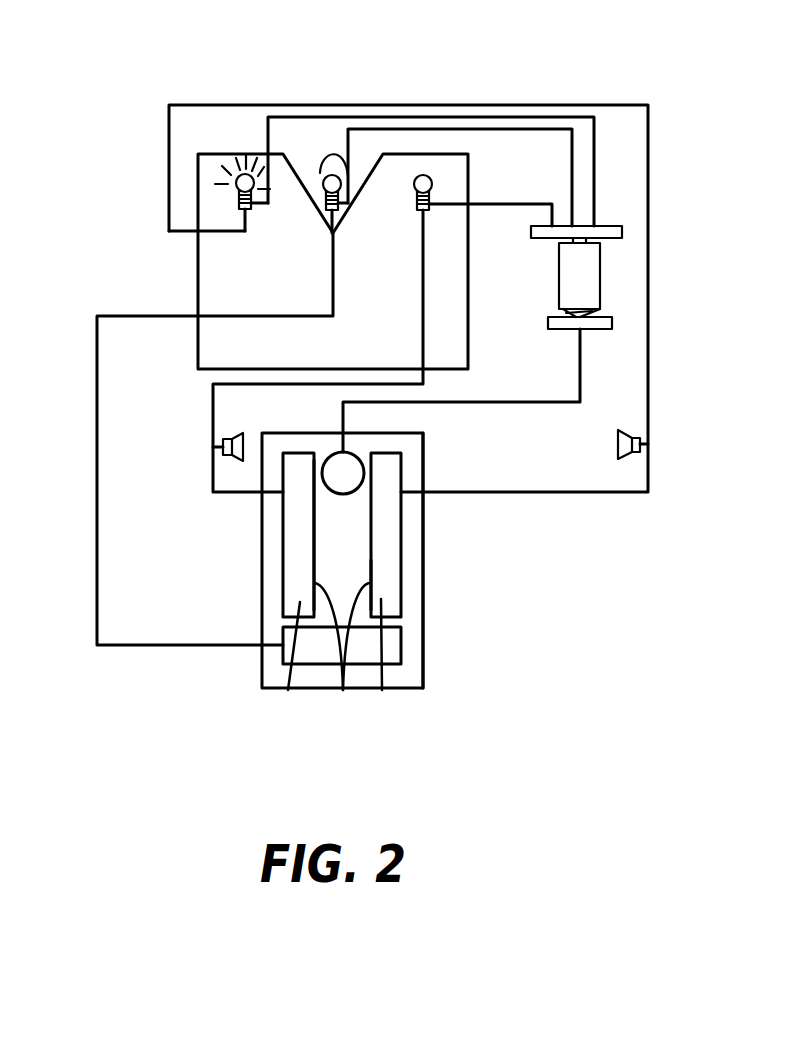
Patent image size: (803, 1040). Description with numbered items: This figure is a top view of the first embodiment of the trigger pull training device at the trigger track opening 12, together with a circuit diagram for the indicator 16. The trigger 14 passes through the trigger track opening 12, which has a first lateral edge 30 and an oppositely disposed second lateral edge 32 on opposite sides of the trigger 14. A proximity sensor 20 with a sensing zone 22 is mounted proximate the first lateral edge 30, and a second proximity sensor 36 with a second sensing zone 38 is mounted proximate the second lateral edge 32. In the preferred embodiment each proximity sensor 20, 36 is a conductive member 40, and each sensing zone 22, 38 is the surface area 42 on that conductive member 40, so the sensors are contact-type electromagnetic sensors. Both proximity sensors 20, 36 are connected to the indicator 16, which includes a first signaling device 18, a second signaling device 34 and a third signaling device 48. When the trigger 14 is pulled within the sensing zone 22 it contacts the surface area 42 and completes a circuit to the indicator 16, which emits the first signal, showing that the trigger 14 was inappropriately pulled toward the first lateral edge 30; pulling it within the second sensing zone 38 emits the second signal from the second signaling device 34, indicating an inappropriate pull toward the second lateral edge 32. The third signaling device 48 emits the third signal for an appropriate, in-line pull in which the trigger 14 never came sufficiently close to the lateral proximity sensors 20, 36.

The trigger track opening 12 is at (423, 586).
The trigger 14 is at (352, 495).
The indicator 16 is at (142, 257).
The first signaling device 18 is at (252, 168).
The proximity sensor 20 is at (295, 536).
The sensing zone 22 is at (313, 525).
The first lateral edge 30 is at (262, 668).
The second lateral edge 32 is at (423, 553).
The second signaling device 34 is at (427, 174).
The second proximity sensor 36 is at (389, 603).
The second sensing zone 38 is at (372, 573).
The conductive member 40 is at (382, 690).
The surface area 42 is at (343, 690).
The third signaling device 48 is at (320, 173).